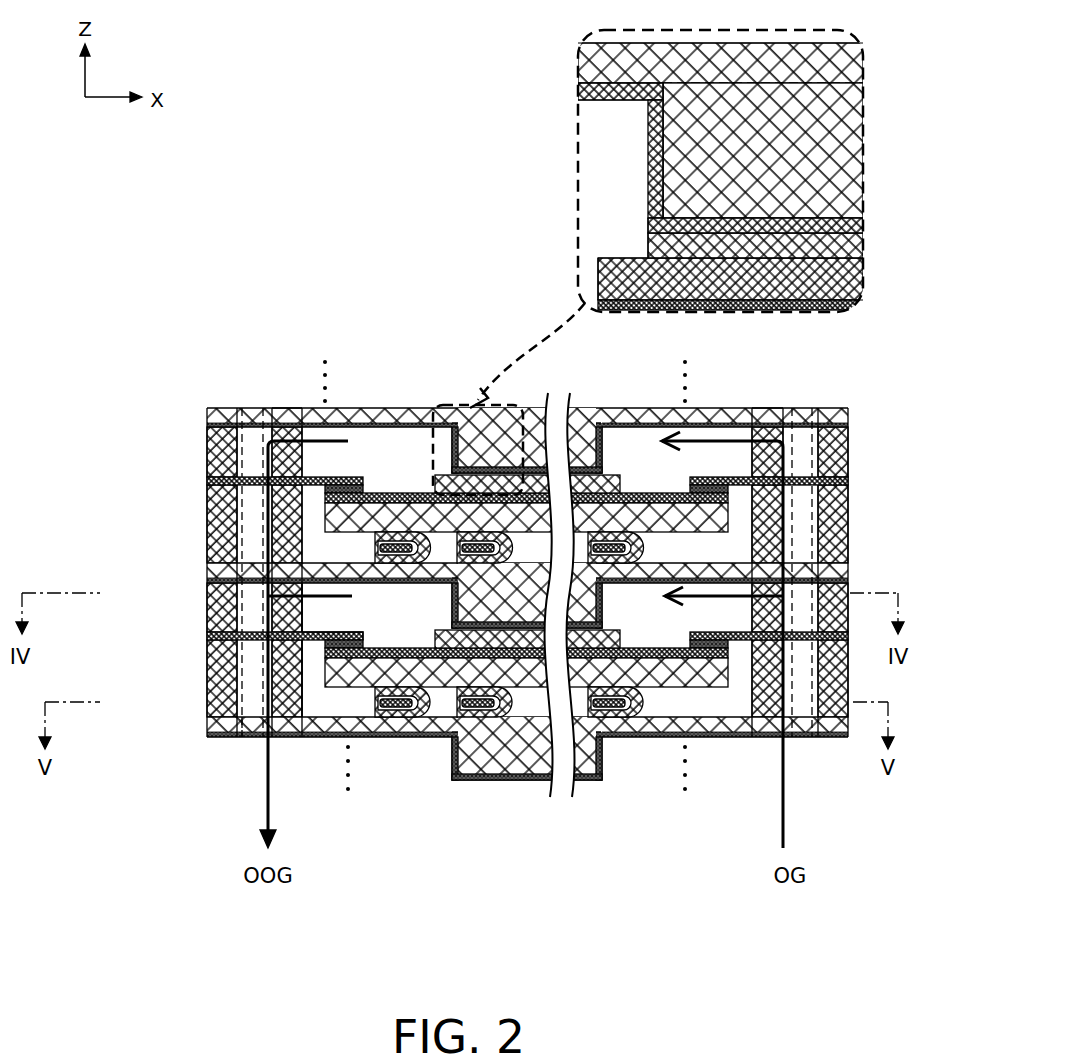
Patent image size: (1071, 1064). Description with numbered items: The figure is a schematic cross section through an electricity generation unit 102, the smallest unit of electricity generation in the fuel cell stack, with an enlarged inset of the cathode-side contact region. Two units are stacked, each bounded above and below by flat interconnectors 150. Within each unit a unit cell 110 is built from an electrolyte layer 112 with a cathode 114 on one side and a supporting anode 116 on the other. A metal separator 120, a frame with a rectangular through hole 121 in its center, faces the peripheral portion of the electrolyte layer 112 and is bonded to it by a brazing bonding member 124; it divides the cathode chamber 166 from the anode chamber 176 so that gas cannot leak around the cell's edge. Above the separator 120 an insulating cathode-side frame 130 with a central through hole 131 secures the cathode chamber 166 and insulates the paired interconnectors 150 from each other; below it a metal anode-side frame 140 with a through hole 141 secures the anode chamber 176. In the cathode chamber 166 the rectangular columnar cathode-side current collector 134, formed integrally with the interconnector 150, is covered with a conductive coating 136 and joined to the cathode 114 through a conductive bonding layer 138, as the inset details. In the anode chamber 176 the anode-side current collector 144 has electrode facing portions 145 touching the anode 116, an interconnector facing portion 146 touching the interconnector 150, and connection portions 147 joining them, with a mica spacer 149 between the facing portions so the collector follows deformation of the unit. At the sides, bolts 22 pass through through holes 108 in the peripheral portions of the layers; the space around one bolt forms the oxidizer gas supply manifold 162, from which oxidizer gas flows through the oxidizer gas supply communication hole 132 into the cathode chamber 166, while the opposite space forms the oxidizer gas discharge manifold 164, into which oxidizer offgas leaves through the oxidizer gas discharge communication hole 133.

The bolt 22 is at (243, 738).
The electricity generation unit 102 is at (135, 418).
The through hole 108 is at (523, 624).
The unit cell 110 is at (593, 472).
The electrolyte layer 112 is at (388, 520).
The cathode 114 is at (425, 498).
The anode 116 is at (372, 490).
The separator 120 is at (207, 481).
The through hole 121 is at (363, 632).
The bonding member 124 is at (320, 490).
The cathode-side frame 130 is at (207, 455).
The through hole 131 is at (302, 615).
The oxidizer gas supply communication hole 132 is at (765, 408).
The oxidizer gas discharge communication hole 133 is at (280, 408).
The cathode-side current collector 134 is at (585, 440).
The coating 136 is at (600, 455).
The bonding layer 138 is at (600, 478).
The anode-side frame 140 is at (207, 535).
The through hole 141 is at (302, 700).
The anode-side current collector 144 is at (470, 792).
The electrode facing portion 145 is at (458, 690).
The interconnector facing portion 146 is at (478, 703).
The connection portion 147 is at (506, 700).
The spacer 149 is at (388, 718).
The interconnector 150 is at (207, 418).
The oxidizer gas supply manifold 162 is at (810, 840).
The oxidizer gas discharge manifold 164 is at (183, 812).
The cathode chamber 166 is at (610, 624).
The anode chamber 176 is at (517, 714).